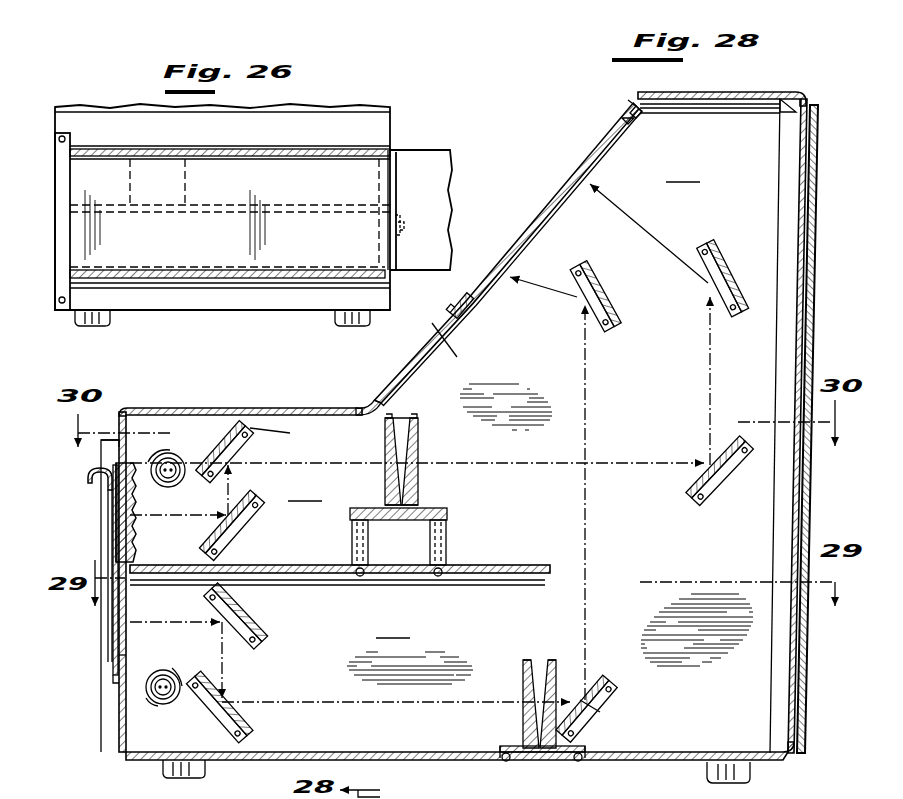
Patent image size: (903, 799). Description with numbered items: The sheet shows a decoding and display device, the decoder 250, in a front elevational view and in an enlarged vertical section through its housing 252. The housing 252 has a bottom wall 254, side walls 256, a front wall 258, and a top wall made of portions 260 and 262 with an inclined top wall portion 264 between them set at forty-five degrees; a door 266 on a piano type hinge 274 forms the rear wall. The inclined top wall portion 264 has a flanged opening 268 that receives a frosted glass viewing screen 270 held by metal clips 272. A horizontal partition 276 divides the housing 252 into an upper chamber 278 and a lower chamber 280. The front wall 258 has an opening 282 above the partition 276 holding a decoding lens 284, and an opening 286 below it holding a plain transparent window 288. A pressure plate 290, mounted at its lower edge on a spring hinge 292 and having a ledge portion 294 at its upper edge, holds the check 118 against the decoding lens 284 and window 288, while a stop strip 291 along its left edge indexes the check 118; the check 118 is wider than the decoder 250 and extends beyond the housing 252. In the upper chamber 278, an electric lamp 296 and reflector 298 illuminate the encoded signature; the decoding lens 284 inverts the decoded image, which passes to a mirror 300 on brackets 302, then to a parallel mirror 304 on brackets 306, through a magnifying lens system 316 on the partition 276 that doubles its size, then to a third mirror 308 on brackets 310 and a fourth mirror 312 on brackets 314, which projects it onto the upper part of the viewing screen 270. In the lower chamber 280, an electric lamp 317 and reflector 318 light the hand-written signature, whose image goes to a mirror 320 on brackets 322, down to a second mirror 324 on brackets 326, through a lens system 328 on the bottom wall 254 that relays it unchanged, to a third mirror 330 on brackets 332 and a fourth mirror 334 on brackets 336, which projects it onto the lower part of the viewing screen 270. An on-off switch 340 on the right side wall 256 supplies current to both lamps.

In FIG. 26, the check 118 is at (428, 162).
In FIG. 28, the check 118 is at (118, 545).
In FIG. 26, the decoder 250 is at (392, 108).
In FIG. 28, the decoder 250 is at (793, 86).
In FIG. 26, the housing 252 is at (258, 314).
In FIG. 28, the housing 252 is at (706, 94).
In FIG. 28, the bottom wall 254 is at (608, 762).
In FIG. 28, the side walls 256 is at (440, 343).
In FIG. 28, the front wall 258 is at (120, 412).
In FIG. 28, the top wall portion 260 is at (300, 408).
In FIG. 28, the top wall portion 262 is at (646, 93).
In FIG. 28, the inclined top wall portion 264 is at (395, 380).
In FIG. 28, the door 266 is at (816, 200).
In FIG. 28, the flanged opening 268 is at (622, 125).
In FIG. 28, the viewing screen 270 is at (553, 203).
In FIG. 28, the metal clips 272 is at (628, 118).
In FIG. 28, the piano type hinge 274 is at (810, 322).
In FIG. 28, the partition 276 is at (500, 566).
In FIG. 28, the upper chamber 278 is at (494, 331).
In FIG. 28, the lower chamber 280 is at (393, 627).
In FIG. 28, the opening 282 is at (100, 446).
In FIG. 26, the decoding lens 284 is at (185, 172).
In FIG. 28, the decoding lens 284 is at (136, 523).
In FIG. 28, the opening 286 is at (132, 662).
In FIG. 26, the window 288 is at (296, 222).
In FIG. 28, the window 288 is at (113, 645).
In FIG. 28, the pressure plate 290 is at (108, 505).
In FIG. 26, the stop strip 291 is at (58, 168).
In FIG. 28, the stop strip 291 is at (110, 738).
In FIG. 26, the spring hinge 292 is at (140, 286).
In FIG. 28, the spring hinge 292 is at (113, 680).
In FIG. 26, the ledge portion 294 is at (266, 152).
In FIG. 28, the ledge portion 294 is at (88, 474).
In FIG. 28, the electric lamp 296 is at (158, 483).
In FIG. 28, the reflector 298 is at (186, 458).
In FIG. 28, the mirror 300 is at (232, 497).
In FIG. 28, the brackets 302 is at (246, 522).
In FIG. 28, the mirror 304 is at (246, 455).
In FIG. 28, the brackets 306 is at (291, 435).
In FIG. 28, the third mirror 308 is at (690, 487).
In FIG. 28, the brackets 310 is at (714, 480).
In FIG. 28, the fourth mirror 312 is at (700, 255).
In FIG. 28, the brackets 314 is at (718, 270).
In FIG. 28, the lens system 316 is at (421, 425).
In FIG. 28, the electric lamp 317 is at (160, 700).
In FIG. 28, the reflector 318 is at (168, 705).
In FIG. 28, the mirror 320 is at (206, 602).
In FIG. 28, the brackets 322 is at (250, 600).
In FIG. 28, the second mirror 324 is at (246, 714).
In FIG. 28, the brackets 326 is at (246, 738).
In FIG. 28, the lens system 328 is at (524, 660).
In FIG. 28, the third mirror 330 is at (600, 682).
In FIG. 28, the brackets 332 is at (608, 707).
In FIG. 28, the fourth mirror 334 is at (590, 330).
In FIG. 28, the brackets 336 is at (595, 268).
In FIG. 26, the on-off switch 340 is at (406, 228).